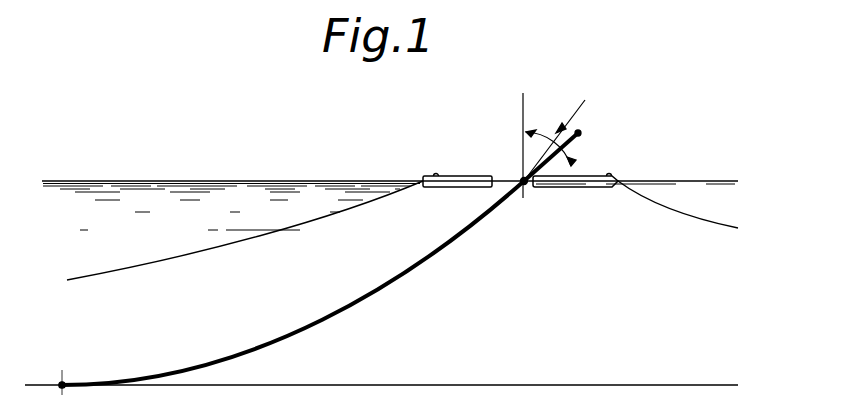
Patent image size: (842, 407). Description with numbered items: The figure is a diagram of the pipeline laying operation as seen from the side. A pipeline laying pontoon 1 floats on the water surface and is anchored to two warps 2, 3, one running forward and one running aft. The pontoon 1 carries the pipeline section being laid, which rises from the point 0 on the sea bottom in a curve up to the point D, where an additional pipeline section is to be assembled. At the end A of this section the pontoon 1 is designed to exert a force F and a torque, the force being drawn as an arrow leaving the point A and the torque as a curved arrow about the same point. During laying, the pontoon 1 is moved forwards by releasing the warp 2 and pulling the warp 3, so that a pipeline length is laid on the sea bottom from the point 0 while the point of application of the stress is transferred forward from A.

The point O on the sea bottom 0 is at (52, 375).
The pipeline laying pontoon 1 is at (461, 176).
The warp 2 is at (196, 253).
The warp 3 is at (699, 217).
The end of the pipeline section A is at (530, 200).
The assembly point of the pipeline section D is at (562, 151).
The force F is at (554, 138).